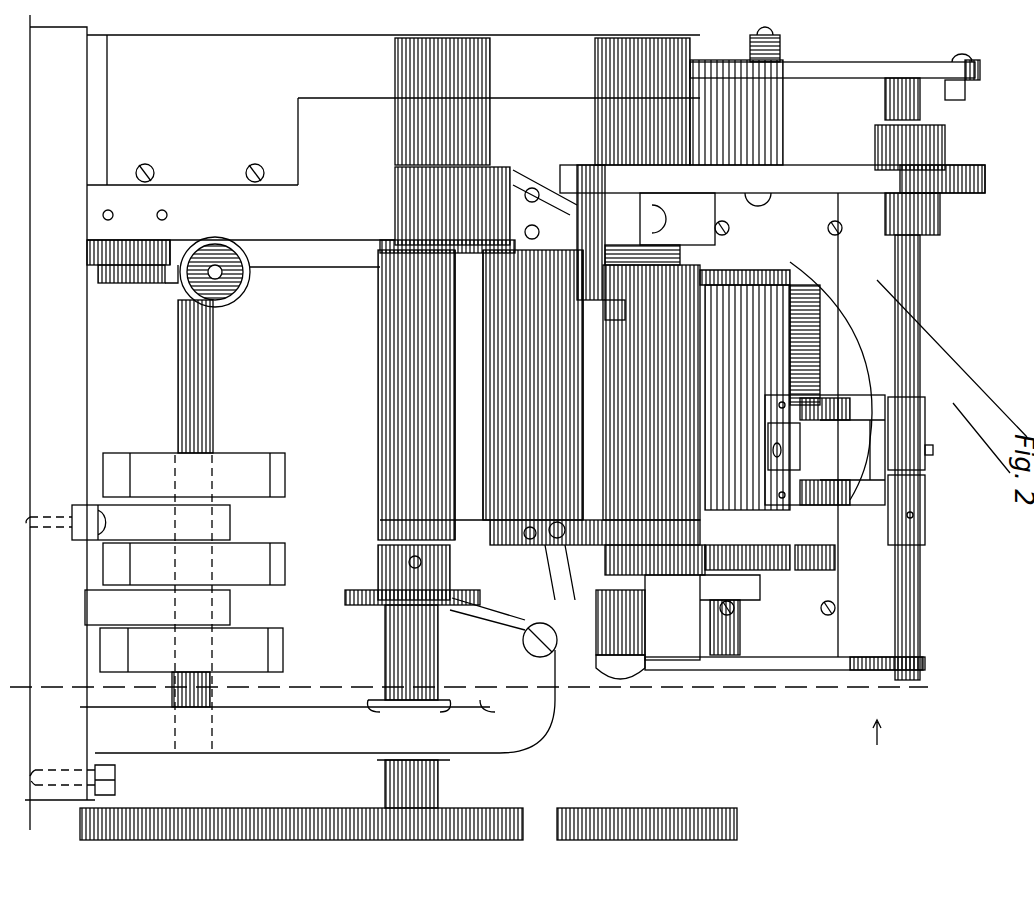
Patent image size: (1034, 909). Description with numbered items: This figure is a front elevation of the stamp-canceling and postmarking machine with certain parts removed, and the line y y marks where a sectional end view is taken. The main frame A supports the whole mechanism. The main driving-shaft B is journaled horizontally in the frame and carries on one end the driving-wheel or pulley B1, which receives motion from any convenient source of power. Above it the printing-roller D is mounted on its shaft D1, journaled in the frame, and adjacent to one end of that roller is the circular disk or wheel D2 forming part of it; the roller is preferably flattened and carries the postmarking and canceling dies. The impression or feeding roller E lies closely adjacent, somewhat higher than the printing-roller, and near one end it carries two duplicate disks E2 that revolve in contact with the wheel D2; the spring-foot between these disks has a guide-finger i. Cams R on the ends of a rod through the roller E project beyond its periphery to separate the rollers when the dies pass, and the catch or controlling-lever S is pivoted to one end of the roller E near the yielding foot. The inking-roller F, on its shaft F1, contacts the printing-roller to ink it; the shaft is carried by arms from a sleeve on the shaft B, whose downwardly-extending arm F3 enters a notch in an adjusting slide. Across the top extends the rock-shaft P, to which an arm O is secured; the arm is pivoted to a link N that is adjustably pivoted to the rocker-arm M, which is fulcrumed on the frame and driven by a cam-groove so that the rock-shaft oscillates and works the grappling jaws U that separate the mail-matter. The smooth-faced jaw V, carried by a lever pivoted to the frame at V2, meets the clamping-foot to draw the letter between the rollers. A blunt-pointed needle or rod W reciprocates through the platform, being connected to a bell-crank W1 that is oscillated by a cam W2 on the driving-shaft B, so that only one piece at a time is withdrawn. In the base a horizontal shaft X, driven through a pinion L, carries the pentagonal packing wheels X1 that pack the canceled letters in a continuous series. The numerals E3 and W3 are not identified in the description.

The main frame A is at (314, 180).
The main driving-shaft B is at (352, 200).
The driving-wheel or pulley B1 is at (572, 768).
The printing-roller D is at (628, 355).
The shaft D1 is at (620, 668).
The circular disk or wheel D2 is at (655, 530).
The impression or feeding roller E is at (790, 320).
The circular disks or wheels E2 is at (765, 575).
The wheel support E3 is at (818, 560).
The inking-roller F is at (585, 355).
The inking-roller shaft F1 is at (352, 432).
The downwardly-extending arm F3 is at (295, 292).
The guide-finger i is at (778, 591).
The pinion L is at (774, 577).
The rocker-arm M is at (750, 55).
The link N is at (852, 70).
The arm O is at (885, 105).
The rock-shaft P is at (920, 305).
The cam R is at (740, 272).
The catch or controlling-lever S is at (222, 290).
The jaws U is at (790, 400).
The smooth-faced jaw V is at (708, 617).
The pivot V2 is at (712, 605).
The blunt-pointed needle or rod W is at (580, 520).
The bell-crank W1 is at (545, 600).
The cam W2 is at (520, 608).
The worm W3 is at (790, 575).
The horizontal shaft X is at (213, 380).
The pentagonal wheels X1 is at (280, 560).
The section line y is at (479, 701).